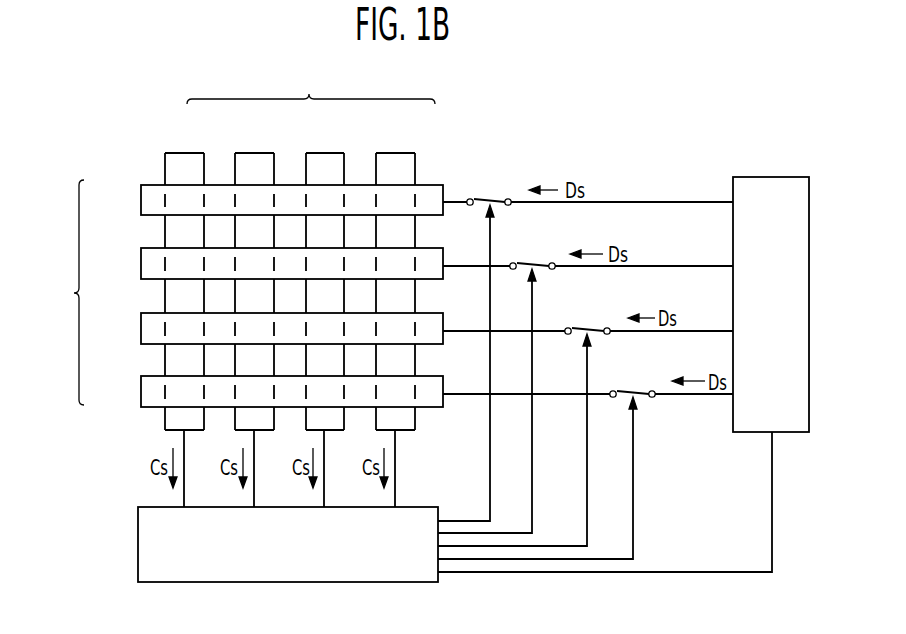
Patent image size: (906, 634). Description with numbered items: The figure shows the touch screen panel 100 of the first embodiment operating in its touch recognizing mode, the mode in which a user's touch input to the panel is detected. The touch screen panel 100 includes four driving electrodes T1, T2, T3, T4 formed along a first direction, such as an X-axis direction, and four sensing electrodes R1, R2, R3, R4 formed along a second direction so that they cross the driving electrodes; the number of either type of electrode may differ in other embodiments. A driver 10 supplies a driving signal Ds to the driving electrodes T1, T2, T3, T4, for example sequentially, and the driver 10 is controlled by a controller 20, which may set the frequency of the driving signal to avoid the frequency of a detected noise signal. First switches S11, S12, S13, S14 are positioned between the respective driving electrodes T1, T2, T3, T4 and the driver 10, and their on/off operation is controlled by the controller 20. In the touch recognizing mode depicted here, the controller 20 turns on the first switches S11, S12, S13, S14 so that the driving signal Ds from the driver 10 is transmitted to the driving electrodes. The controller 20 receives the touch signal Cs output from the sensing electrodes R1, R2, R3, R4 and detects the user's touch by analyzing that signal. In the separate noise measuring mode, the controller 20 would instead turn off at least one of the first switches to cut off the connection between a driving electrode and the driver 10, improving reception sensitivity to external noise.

The touch screen panel 100 is at (377, 246).
The driver 10 is at (765, 176).
The controller 20 is at (413, 507).
The driving electrode T1 is at (141, 202).
The driving electrode T2 is at (141, 266).
The driving electrode T3 is at (141, 331).
The driving electrode T4 is at (141, 394).
The sensing electrode R1 is at (185, 152).
The sensing electrode R2 is at (255, 152).
The sensing electrode R3 is at (325, 152).
The sensing electrode R4 is at (395, 152).
The first switch S11 is at (489, 190).
The first switch S12 is at (532, 254).
The first switch S13 is at (587, 318).
The first switch S14 is at (632, 382).